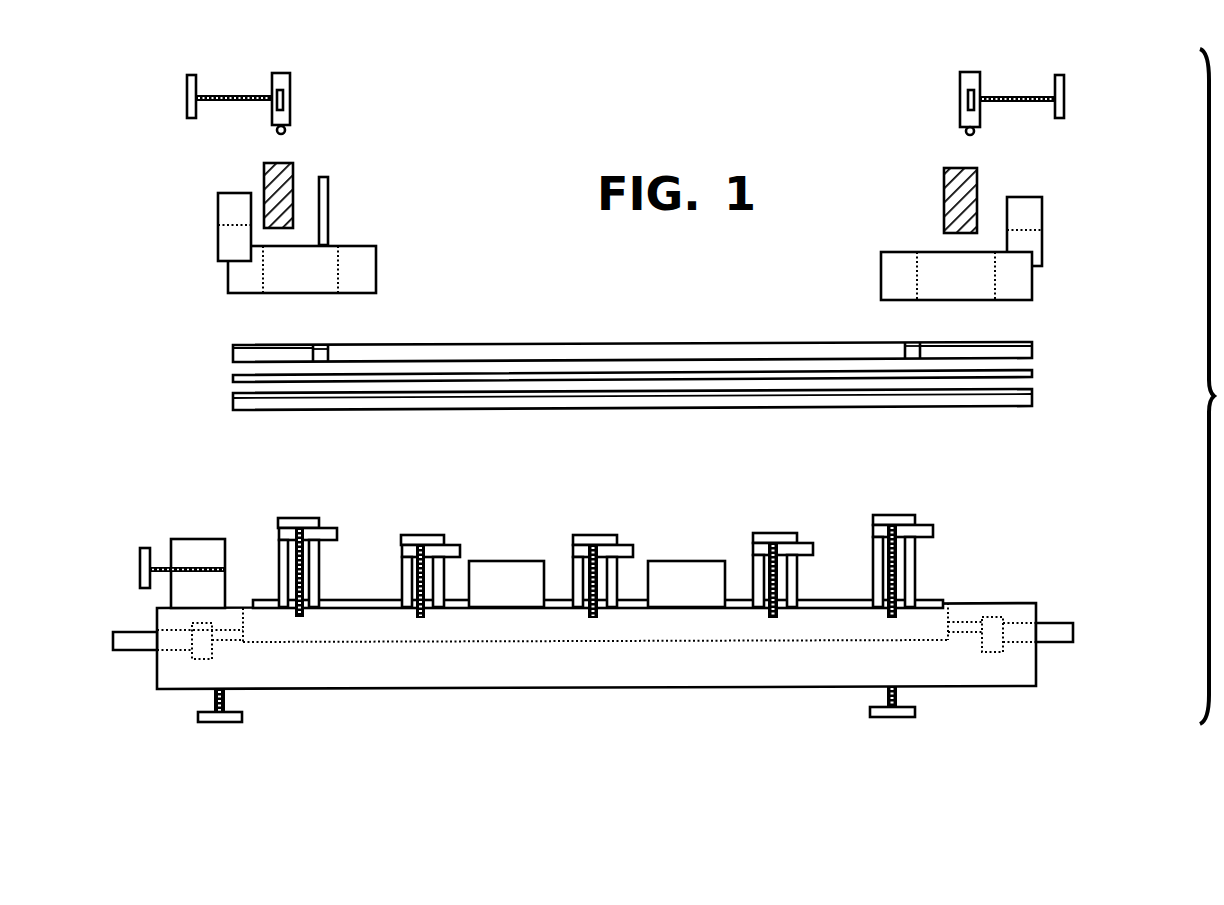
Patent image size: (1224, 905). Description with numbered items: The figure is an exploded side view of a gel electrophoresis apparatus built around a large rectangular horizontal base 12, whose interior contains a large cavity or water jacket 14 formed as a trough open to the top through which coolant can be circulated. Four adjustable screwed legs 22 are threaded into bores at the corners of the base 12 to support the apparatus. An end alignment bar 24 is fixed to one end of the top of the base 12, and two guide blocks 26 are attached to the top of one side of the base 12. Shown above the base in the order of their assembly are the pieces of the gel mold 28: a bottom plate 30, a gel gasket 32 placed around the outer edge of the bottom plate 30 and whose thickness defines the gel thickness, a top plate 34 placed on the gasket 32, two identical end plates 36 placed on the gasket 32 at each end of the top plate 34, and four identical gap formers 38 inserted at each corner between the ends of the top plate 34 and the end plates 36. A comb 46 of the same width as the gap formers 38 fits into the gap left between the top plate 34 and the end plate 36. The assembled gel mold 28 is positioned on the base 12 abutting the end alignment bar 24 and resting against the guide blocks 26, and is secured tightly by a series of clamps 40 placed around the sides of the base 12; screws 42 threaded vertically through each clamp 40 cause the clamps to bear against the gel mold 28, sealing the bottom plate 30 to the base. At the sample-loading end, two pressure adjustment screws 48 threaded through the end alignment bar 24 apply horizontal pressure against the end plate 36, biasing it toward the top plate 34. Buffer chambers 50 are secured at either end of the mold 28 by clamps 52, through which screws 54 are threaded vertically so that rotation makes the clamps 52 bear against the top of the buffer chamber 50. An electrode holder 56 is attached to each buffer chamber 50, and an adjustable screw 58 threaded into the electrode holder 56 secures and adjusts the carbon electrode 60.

The base 12 is at (350, 670).
The water jacket 14 is at (473, 625).
The adjustable screwed legs 22 is at (243, 718).
The end alignment bar 24 is at (188, 553).
The guide blocks 26 is at (499, 577).
The gel mold 28 is at (636, 377).
The bottom plate 30 is at (245, 402).
The gel gasket 32 is at (231, 381).
The top plate 34 is at (642, 351).
The end plates 36 is at (245, 353).
The gap formers 38 is at (330, 345).
The clamps 40 is at (455, 545).
The screws 42 is at (418, 535).
The comb 46 is at (330, 183).
The pressure adjustment screws 48 is at (140, 583).
The buffer chambers 50 is at (378, 257).
The clamps 52 is at (337, 530).
The screws 54 is at (298, 523).
The electrode holder 56 is at (215, 228).
The adjustable screw 58 is at (190, 74).
The carbon electrode 60 is at (286, 72).